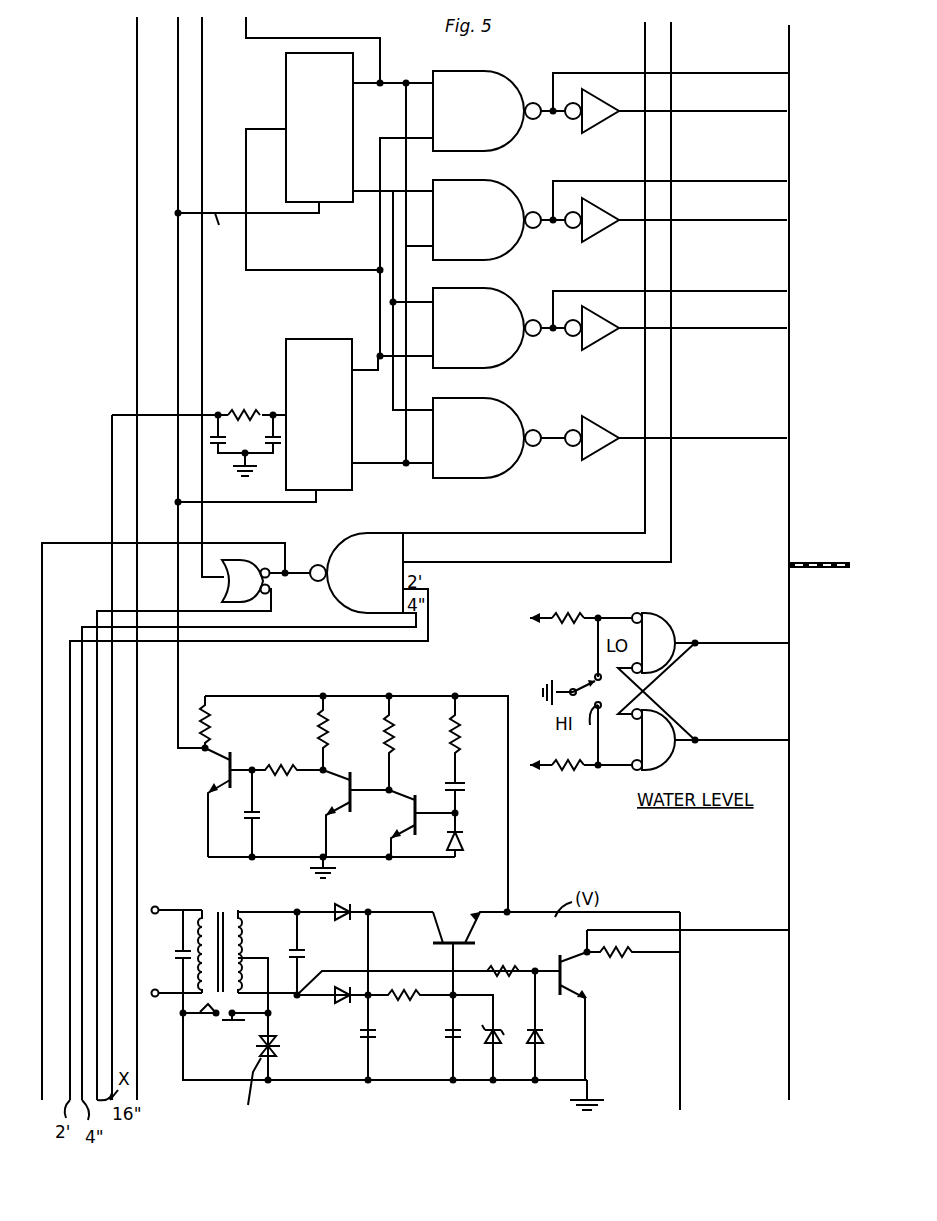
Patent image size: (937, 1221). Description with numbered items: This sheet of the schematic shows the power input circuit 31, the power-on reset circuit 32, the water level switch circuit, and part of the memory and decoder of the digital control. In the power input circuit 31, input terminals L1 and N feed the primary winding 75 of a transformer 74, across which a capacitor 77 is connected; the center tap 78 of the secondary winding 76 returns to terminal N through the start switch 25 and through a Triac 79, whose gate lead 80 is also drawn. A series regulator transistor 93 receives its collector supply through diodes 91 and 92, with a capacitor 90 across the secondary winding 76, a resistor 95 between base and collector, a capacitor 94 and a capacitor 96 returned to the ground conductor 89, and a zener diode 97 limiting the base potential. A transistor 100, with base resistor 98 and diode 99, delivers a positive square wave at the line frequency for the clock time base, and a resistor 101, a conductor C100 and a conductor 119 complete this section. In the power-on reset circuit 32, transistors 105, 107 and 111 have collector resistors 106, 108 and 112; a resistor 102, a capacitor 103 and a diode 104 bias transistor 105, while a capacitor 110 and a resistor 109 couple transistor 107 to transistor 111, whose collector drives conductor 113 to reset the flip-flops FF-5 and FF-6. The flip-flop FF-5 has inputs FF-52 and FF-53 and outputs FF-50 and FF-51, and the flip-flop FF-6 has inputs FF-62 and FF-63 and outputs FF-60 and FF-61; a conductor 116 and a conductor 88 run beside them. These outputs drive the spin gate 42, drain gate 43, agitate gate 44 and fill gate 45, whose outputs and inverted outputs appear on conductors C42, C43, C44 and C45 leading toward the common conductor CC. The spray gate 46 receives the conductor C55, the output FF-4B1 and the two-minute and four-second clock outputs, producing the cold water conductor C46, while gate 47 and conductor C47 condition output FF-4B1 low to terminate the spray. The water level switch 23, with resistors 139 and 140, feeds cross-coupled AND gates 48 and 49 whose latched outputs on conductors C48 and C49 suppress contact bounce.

The power line 88 is at (160, 1091).
The conductor 113 is at (188, 657).
The conductor C47 is at (202, 50).
The common conductor CC is at (845, 562).
The output of flip-flop FF-4B FF-4B1 is at (645, 50).
The conductor C55 is at (722, 38).
The flip-flop FF-5 is at (319, 127).
The output conductor of flip-flop FF-5 FF-51 is at (390, 32).
The flip-flop 5 input FF-52 is at (275, 132).
The flip-flop 5 input FF-53 is at (316, 235).
The line 116 is at (219, 230).
The output of flip-flop FF-5 FF-50 is at (352, 200).
The flip-flop FF-6 is at (319, 414).
The output of flip-flop FF-6 FF-61 is at (368, 350).
The flip-flop 6 input network FF-62 is at (278, 408).
The output conductor of flip-flop FF-6 FF-60 is at (360, 470).
The flip-flop 6 input FF-63 is at (318, 500).
The spin gate 42 is at (611, 111).
The drain gate 43 is at (610, 220).
The agitate gate 44 is at (610, 328).
The fill gate 45 is at (610, 437).
The conductor C42 is at (776, 97).
The conductor C43 is at (776, 204).
The conductor C44 is at (776, 334).
The output conductor C45 is at (759, 428).
The conductor C46 is at (42, 1098).
The gate 47 is at (203, 829).
The gate 46 is at (352, 573).
The resistor 139 is at (580, 610).
The resistor 140 is at (578, 772).
The water level switch 23 is at (582, 680).
The AND gate 48 is at (703, 676).
The AND gate 49 is at (703, 710).
The conductor C48 is at (759, 632).
The conductor C49 is at (759, 730).
The resistor 112 is at (228, 715).
The transistor 111 is at (200, 770).
The resistor 109 is at (296, 748).
The capacitor 110 is at (256, 822).
The resistor 108 is at (332, 725).
The transistor 107 is at (342, 792).
The resistor 106 is at (398, 740).
The transistor 105 is at (408, 815).
The resistor 102 is at (462, 725).
The capacitor 103 is at (462, 778).
The diode 104 is at (463, 852).
The power-on reset circuit 32 is at (508, 857).
The power input circuit 31 is at (507, 912).
The input terminal L1 is at (175, 900).
The input terminal N is at (175, 983).
The primary winding 75 is at (218, 895).
The transformer 74 is at (220, 910).
The center tap secondary winding 76 is at (244, 925).
The capacitor 77 is at (180, 950).
The center tap 78 is at (245, 955).
The start switch 25 is at (226, 1035).
The Triac 79 is at (282, 1046).
The triac gate 80 is at (241, 1088).
The diode 91 is at (345, 900).
The capacitor 90 is at (305, 955).
The diode 92 is at (345, 1005).
The capacitor 94 is at (378, 1036).
The resistor 95 is at (392, 1005).
The capacitor 96 is at (474, 1048).
The transistor 93 is at (455, 935).
The zener diode 97 is at (478, 1037).
The resistor 98 is at (505, 962).
The diode 99 is at (543, 1040).
The transistor 100 is at (575, 975).
The resistor 101 is at (625, 960).
The supply line C100 is at (688, 920).
The line 119 is at (680, 1040).
The ground conductor 89 is at (425, 1078).